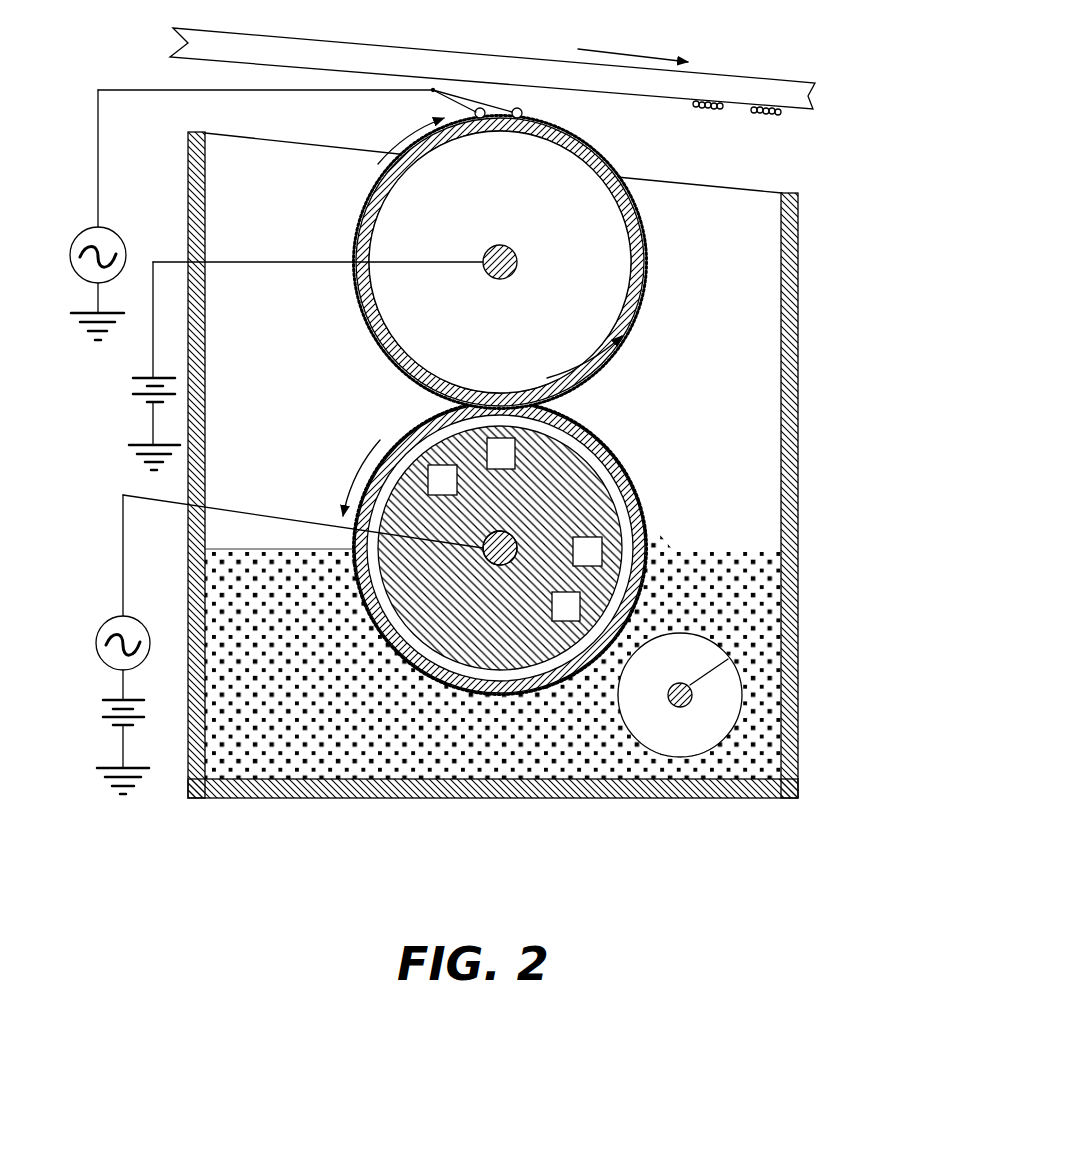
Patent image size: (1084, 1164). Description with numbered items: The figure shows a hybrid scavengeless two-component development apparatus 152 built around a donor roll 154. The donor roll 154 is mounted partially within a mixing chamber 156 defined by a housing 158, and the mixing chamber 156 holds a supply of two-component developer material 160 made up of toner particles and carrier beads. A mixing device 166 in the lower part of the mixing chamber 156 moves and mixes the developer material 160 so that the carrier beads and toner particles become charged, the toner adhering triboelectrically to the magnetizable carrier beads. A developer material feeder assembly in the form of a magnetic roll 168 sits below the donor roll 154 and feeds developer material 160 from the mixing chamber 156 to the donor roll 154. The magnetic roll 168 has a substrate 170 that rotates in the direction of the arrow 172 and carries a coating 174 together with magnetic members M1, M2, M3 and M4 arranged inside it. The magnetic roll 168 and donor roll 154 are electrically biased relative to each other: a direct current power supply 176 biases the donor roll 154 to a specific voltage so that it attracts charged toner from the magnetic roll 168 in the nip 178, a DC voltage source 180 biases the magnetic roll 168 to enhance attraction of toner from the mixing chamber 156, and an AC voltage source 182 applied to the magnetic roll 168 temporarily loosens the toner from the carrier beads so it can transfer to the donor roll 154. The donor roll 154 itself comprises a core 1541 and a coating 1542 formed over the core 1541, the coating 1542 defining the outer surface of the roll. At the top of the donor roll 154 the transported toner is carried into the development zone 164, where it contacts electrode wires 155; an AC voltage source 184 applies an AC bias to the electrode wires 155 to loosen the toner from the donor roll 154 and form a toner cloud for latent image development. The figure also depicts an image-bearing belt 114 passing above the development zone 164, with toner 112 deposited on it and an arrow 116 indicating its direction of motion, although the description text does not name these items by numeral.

The toner particles 112 is at (724, 92).
The image carrier belt 114 is at (250, 52).
The moving direction of image carrier 116 is at (648, 58).
The hybrid scavengeless two-component development apparatus 152 is at (808, 222).
The donor roll 154 is at (507, 262).
The electrode wires 155 is at (484, 108).
The mixing chamber 156 is at (755, 489).
The housing 158 is at (782, 218).
The two-component developer material 160 is at (387, 758).
The development zone 164 is at (554, 122).
The mixing device 166 is at (700, 747).
The magnetic roll 168 is at (478, 545).
The substrate 170 is at (470, 442).
The arrow 172 is at (356, 474).
The coating 174 is at (605, 457).
The direct current power supply 176 is at (143, 396).
The nip 178 is at (574, 400).
The DC voltage source 180 is at (130, 718).
The AC voltage source 182 is at (131, 623).
The AC voltage source 184 is at (109, 233).
The core 1541 is at (396, 309).
The coating 1542 is at (642, 294).
The magnetic member M1 is at (552, 608).
The magnetic member M2 is at (577, 537).
The magnetic member M3 is at (497, 469).
The magnetic member M4 is at (444, 495).